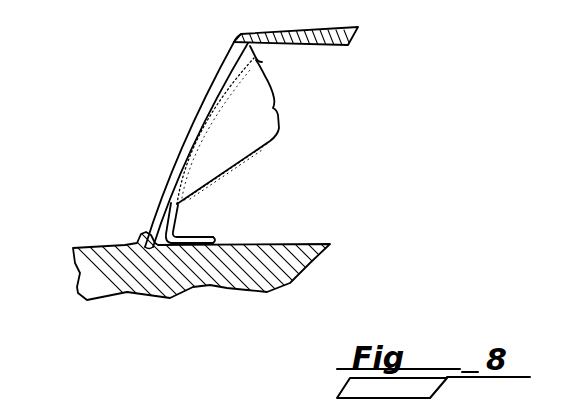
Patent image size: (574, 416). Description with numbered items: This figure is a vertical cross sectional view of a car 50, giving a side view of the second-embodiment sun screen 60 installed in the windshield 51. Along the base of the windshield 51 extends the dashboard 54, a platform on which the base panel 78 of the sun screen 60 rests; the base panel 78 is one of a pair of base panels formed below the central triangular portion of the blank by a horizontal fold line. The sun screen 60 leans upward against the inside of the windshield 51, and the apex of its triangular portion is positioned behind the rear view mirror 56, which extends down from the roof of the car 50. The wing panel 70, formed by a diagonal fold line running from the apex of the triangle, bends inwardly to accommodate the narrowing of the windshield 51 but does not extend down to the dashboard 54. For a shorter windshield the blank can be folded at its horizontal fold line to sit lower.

The car 50 is at (133, 150).
The windshield 51 is at (196, 103).
The dashboard 54 is at (303, 244).
The rear view mirror 56 is at (258, 62).
The sun screen 60 is at (272, 156).
The wing panel 70 is at (273, 108).
The base panel 78 is at (193, 237).